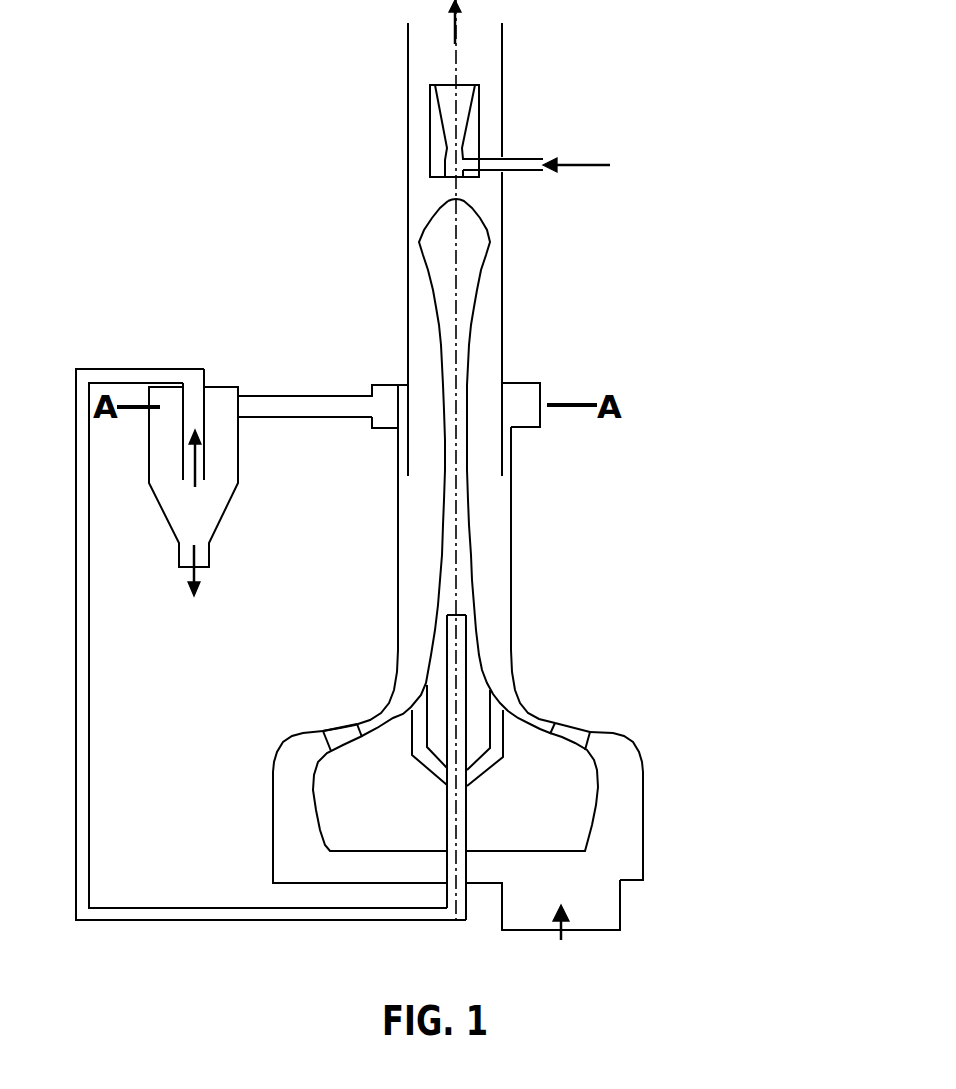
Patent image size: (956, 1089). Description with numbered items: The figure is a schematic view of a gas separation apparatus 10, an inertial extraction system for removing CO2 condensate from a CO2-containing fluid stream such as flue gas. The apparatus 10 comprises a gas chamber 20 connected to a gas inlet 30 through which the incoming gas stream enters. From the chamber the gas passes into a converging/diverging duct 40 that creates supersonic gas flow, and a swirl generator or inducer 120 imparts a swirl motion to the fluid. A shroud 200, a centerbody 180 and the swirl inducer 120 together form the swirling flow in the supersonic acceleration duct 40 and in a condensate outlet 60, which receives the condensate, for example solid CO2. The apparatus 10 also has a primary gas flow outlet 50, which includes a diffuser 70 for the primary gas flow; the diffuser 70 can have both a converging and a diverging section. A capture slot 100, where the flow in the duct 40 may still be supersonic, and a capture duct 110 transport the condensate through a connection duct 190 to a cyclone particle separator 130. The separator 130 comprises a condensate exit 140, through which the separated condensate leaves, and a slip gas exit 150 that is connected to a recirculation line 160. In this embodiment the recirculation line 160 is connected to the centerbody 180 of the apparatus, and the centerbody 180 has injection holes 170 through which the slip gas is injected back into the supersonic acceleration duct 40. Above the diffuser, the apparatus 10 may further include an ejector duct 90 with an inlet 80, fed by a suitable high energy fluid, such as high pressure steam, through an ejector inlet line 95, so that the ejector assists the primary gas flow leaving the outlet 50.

The gas separation apparatus 10 is at (770, 549).
The gas chamber 20 is at (608, 840).
The gas inlet 30 is at (592, 900).
The converging/diverging duct 40 is at (613, 765).
The primary gas flow outlet 50 is at (490, 328).
The condensate outlet 60 is at (507, 492).
The diffuser 70 is at (477, 238).
The inlet 80 is at (483, 194).
The ejector duct 90 is at (492, 136).
The ejector inlet line 95 is at (527, 162).
The capture slot 100 is at (512, 463).
The capture duct 110 is at (523, 408).
The swirl generator or inducer 120 is at (572, 733).
The cyclone particle separator 130 is at (217, 473).
The condensate exit 140 is at (203, 552).
The slip gas exit 150 is at (189, 376).
The recirculation line 160 is at (80, 843).
The injection holes 170 is at (418, 717).
The centerbody 180 is at (383, 785).
The connection duct 190 is at (291, 399).
The shroud 200 is at (515, 658).